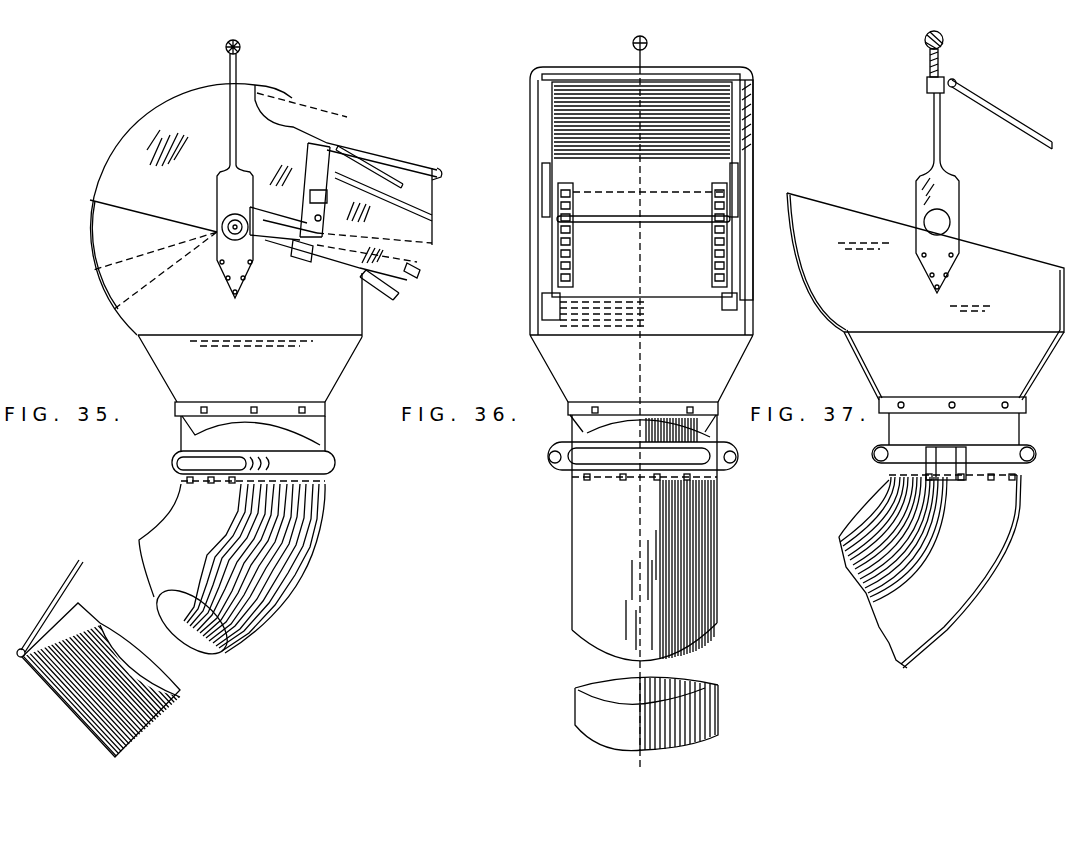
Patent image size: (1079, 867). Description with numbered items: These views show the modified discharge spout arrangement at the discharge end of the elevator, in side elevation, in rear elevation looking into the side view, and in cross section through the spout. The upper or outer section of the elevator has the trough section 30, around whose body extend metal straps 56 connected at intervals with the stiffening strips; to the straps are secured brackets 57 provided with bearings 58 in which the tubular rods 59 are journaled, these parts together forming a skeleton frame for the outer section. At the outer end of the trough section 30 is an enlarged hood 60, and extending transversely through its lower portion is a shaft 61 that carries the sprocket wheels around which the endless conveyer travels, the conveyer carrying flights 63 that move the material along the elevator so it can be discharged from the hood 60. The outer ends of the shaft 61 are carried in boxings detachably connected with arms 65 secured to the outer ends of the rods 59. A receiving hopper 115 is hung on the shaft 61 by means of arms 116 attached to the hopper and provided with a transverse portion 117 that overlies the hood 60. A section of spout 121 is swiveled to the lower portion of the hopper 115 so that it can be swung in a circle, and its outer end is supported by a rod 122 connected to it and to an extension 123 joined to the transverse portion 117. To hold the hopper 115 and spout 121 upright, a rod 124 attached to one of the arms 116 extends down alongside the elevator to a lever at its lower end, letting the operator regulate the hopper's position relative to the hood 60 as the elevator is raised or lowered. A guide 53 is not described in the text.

In FIG. 35, the trough section 30 is at (346, 182).
In FIG. 35, the guide bracket 53 is at (434, 225).
In FIG. 36, the guide bracket 53 is at (738, 180).
In FIG. 35, the metal straps 56 is at (333, 190).
In FIG. 35, the brackets 57 is at (312, 213).
In FIG. 35, the bearings 58 is at (310, 249).
In FIG. 36, the bearings 58 is at (735, 235).
In FIG. 35, the tubular rods 59 is at (383, 303).
In FIG. 36, the tubular rods 59 is at (740, 305).
In FIG. 35, the hood 60 is at (172, 209).
In FIG. 36, the hood 60 is at (642, 189).
In FIG. 35, the shaft 61 is at (223, 232).
In FIG. 36, the flights 63 is at (618, 221).
In FIG. 35, the arms 65 is at (318, 286).
In FIG. 35, the receiving hopper 115 is at (250, 344).
In FIG. 36, the receiving hopper 115 is at (640, 344).
In FIG. 37, the receiving hopper 115 is at (925, 303).
In FIG. 35, the arms 116 is at (232, 188).
In FIG. 36, the arms 116 is at (538, 100).
In FIG. 37, the arms 116 is at (922, 187).
In FIG. 36, the transverse portion 117 is at (602, 66).
In FIG. 37, the transverse portion 117 is at (943, 65).
In FIG. 35, the spout 121 is at (338, 562).
In FIG. 36, the spout 121 is at (588, 543).
In FIG. 37, the spout 121 is at (867, 508).
In FIG. 35, the rod 122 is at (74, 576).
In FIG. 36, the rod 122 is at (647, 680).
In FIG. 35, the extension 123 is at (243, 45).
In FIG. 36, the extension 123 is at (650, 42).
In FIG. 37, the extension 123 is at (945, 45).
In FIG. 35, the rod 124 is at (361, 158).
In FIG. 36, the rod 124 is at (752, 122).
In FIG. 37, the rod 124 is at (1020, 137).